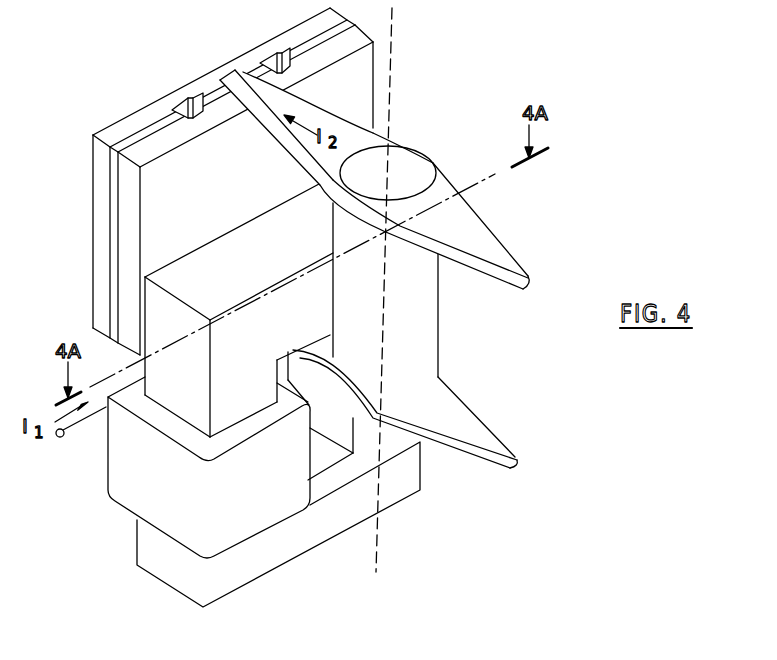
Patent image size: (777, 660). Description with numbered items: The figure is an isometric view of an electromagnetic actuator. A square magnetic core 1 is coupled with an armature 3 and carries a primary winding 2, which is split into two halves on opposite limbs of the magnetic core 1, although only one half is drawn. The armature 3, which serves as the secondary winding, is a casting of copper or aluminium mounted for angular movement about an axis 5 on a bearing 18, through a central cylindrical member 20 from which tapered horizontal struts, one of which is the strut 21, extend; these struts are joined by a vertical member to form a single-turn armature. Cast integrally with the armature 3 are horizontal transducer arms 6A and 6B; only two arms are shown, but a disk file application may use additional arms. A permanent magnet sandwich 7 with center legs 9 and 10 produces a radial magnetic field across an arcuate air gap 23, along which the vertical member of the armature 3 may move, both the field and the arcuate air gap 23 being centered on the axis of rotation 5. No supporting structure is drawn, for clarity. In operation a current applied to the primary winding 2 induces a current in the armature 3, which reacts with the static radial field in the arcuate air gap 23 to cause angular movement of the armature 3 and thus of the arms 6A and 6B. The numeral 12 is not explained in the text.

The square magnetic core 1 is at (290, 548).
The primary winding 2 is at (122, 493).
The armature 3 is at (370, 138).
The axis 5 is at (393, 68).
The horizontal transducer arm 6A is at (497, 237).
The horizontal transducer arm 6B is at (485, 430).
The permanent magnet sandwich 7 is at (118, 128).
The center leg 9 is at (232, 104).
The center leg 10 is at (247, 56).
The lead wire 12 is at (60, 437).
The bearing 18 is at (423, 158).
The central cylindrical member 20 is at (423, 322).
The tapered horizontal strut 21 is at (312, 110).
The arcuate air gap 23 is at (210, 92).